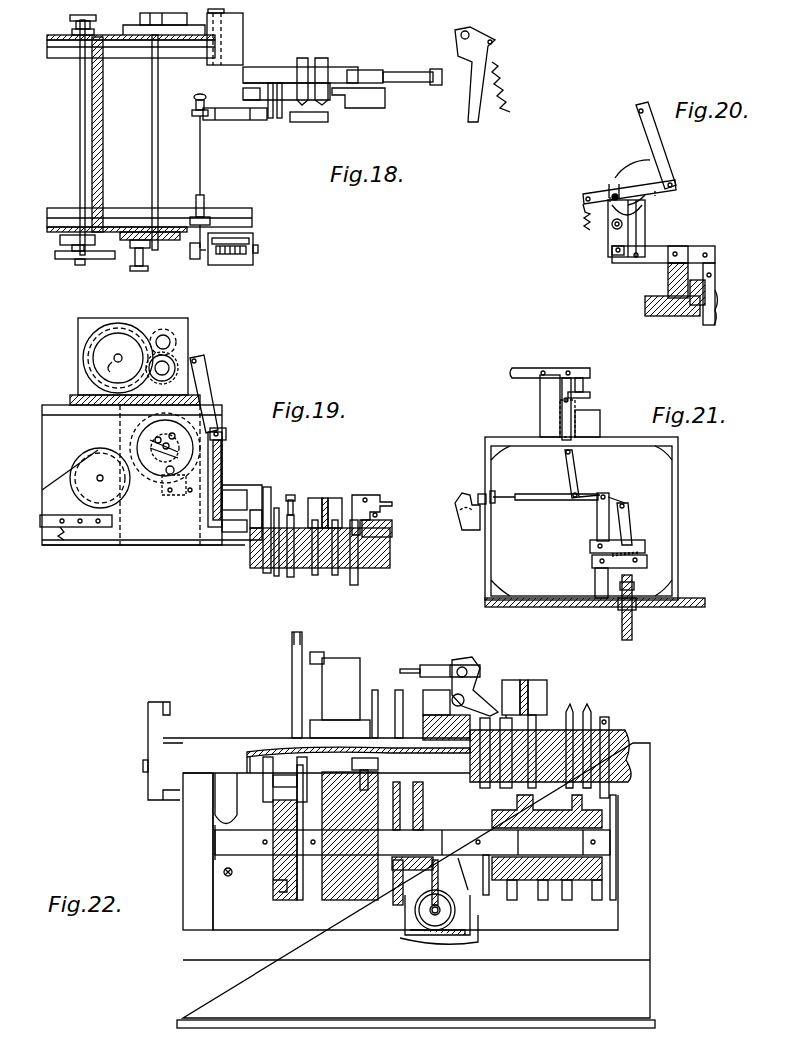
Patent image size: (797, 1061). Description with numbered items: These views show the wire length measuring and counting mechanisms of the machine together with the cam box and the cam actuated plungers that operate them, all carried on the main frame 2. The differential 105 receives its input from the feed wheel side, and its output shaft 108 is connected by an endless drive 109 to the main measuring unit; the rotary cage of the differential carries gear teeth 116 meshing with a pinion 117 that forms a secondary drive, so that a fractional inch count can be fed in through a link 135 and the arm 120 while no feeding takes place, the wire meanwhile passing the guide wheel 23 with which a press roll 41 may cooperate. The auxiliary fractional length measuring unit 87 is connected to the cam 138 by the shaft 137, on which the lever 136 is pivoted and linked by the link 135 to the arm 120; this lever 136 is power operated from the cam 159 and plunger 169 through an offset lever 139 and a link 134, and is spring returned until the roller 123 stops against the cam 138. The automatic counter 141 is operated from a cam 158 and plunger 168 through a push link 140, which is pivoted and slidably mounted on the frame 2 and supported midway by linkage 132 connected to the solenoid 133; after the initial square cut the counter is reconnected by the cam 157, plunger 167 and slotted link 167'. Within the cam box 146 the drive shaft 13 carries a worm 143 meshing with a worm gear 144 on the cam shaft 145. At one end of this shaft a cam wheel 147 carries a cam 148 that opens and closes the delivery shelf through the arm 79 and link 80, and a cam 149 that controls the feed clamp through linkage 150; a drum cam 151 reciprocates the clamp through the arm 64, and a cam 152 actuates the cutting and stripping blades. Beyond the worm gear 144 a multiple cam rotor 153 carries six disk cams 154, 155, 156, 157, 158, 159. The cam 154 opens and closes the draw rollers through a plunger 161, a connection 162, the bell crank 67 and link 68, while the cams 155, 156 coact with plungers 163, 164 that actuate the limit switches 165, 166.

In FIG. 20, the main frame 2 is at (643, 307).
In FIG. 19, the main frame 2 is at (48, 545).
In FIG. 21, the main frame 2 is at (535, 606).
In FIG. 22, the main frame 2 is at (225, 1028).
In FIG. 22, the drive shaft 13 is at (428, 920).
In FIG. 19, the guide wheel 23 is at (70, 458).
In FIG. 19, the press roll 41 is at (94, 530).
In FIG. 22, the arm 64 is at (358, 758).
In FIG. 18, the bell-crank 67 is at (458, 44).
In FIG. 18, the link 68 is at (493, 70).
In FIG. 22, the arm 79 is at (150, 746).
In FIG. 22, the link 80 is at (147, 705).
In FIG. 18, the fractional length measuring unit 87 is at (165, 248).
In FIG. 19, the fractional length measuring unit 87 is at (155, 425).
In FIG. 19, the differential 105 is at (80, 322).
In FIG. 19, the output shaft 108 is at (121, 369).
In FIG. 19, the endless drive 109 is at (90, 360).
In FIG. 19, the gear teeth 116 is at (118, 323).
In FIG. 19, the pinion 117 is at (166, 330).
In FIG. 19, the arm 120 is at (170, 360).
In FIG. 20, the roller 123 is at (612, 228).
In FIG. 21, the linkage 132 is at (528, 376).
In FIG. 21, the solenoid 133 is at (592, 425).
In FIG. 20, the link 134 is at (640, 224).
In FIG. 20, the link 135 is at (653, 130).
In FIG. 19, the link 135 is at (208, 378).
In FIG. 20, the lever 136 is at (677, 188).
In FIG. 19, the lever 136 is at (226, 441).
In FIG. 18, the shaft 137 is at (152, 138).
In FIG. 20, the shaft 137 is at (612, 195).
In FIG. 19, the shaft 137 is at (162, 478).
In FIG. 18, the cam 138 is at (122, 40).
In FIG. 20, the cam 138 is at (642, 170).
In FIG. 19, the cam 138 is at (222, 463).
In FIG. 18, the offset lever 139 is at (230, 58).
In FIG. 20, the offset lever 139 is at (696, 250).
In FIG. 18, the push link 140 is at (201, 160).
In FIG. 21, the push link 140 is at (556, 500).
In FIG. 18, the automatic counter 141 is at (250, 260).
In FIG. 21, the automatic counter 141 is at (452, 512).
In FIG. 22, the worm 143 is at (452, 922).
In FIG. 22, the worm gear 144 is at (410, 918).
In FIG. 22, the cam shaft 145 is at (620, 840).
In FIG. 22, the cam box 146 is at (188, 870).
In FIG. 22, the cam wheel 147 is at (280, 900).
In FIG. 22, the cam 148 is at (273, 884).
In FIG. 22, the cam 149 is at (299, 900).
In FIG. 22, the linkage 150 is at (292, 680).
In FIG. 22, the drum cam 151 is at (347, 900).
In FIG. 22, the cam 152 is at (418, 790).
In FIG. 22, the multiple cam rotor 153 is at (604, 868).
In FIG. 22, the disk cam 154 is at (486, 895).
In FIG. 22, the disk cam 155 is at (510, 900).
In FIG. 22, the disk cam 156 is at (542, 900).
In FIG. 22, the disk cam 157 is at (566, 900).
In FIG. 22, the disk cam 158 is at (596, 900).
In FIG. 22, the disk cam 159 is at (618, 895).
In FIG. 19, the plunger 161 is at (360, 578).
In FIG. 22, the plunger 161 is at (478, 782).
In FIG. 19, the connection 162 is at (388, 496).
In FIG. 22, the connection 162 is at (410, 668).
In FIG. 19, the plunger 163 is at (337, 578).
In FIG. 22, the plunger 163 is at (466, 672).
In FIG. 19, the plunger 164 is at (314, 578).
In FIG. 22, the plunger 164 is at (540, 716).
In FIG. 19, the limit switch 165 is at (338, 497).
In FIG. 22, the limit switch 165 is at (508, 680).
In FIG. 19, the limit switch 166 is at (315, 497).
In FIG. 22, the limit switch 166 is at (537, 680).
In FIG. 19, the plunger 167 is at (294, 557).
In FIG. 21, the plunger 167 is at (649, 608).
In FIG. 22, the plunger 167 is at (593, 728).
In FIG. 21, the slotted link 167' is at (648, 519).
In FIG. 19, the plunger 168 is at (276, 578).
In FIG. 22, the plunger 168 is at (590, 708).
In FIG. 20, the plunger 169 is at (708, 326).
In FIG. 19, the plunger 169 is at (262, 573).
In FIG. 22, the plunger 169 is at (610, 768).